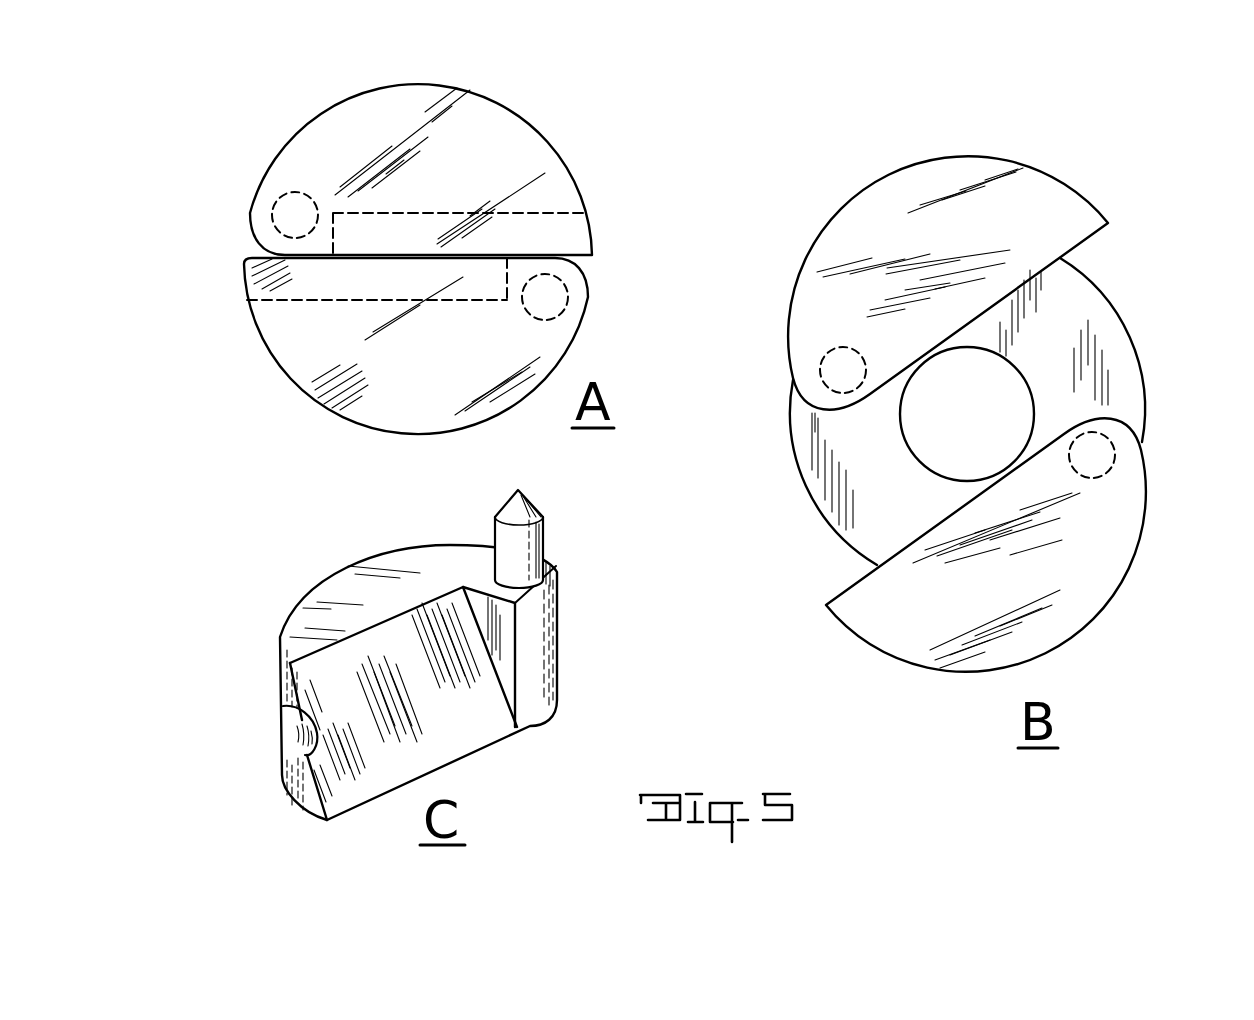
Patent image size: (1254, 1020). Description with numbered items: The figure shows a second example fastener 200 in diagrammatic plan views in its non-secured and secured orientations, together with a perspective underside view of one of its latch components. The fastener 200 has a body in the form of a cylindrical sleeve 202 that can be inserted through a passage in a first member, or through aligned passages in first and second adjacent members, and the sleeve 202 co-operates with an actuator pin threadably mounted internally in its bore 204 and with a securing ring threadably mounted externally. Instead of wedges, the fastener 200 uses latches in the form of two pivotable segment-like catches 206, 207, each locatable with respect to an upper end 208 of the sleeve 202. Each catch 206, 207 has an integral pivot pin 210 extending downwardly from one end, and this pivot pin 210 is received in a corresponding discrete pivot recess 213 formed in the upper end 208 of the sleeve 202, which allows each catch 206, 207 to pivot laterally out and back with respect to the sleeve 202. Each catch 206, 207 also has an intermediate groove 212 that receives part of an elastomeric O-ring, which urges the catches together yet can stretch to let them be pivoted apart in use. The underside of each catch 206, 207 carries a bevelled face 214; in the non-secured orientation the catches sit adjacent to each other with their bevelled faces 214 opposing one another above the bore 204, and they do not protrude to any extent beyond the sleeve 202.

In FIG. 5A, the second example fastener 200 is at (395, 265).
In FIG. 5B, the second example fastener 200 is at (971, 406).
In FIG. 5B, the cylindrical sleeve 202 is at (971, 411).
In FIG. 5B, the bore 204 is at (908, 449).
In FIG. 5A, the catch 206 is at (523, 140).
In FIG. 5B, the catch 206 is at (1058, 200).
In FIG. 5C, the catch 206 is at (384, 634).
In FIG. 5A, the catch 207 is at (357, 407).
In FIG. 5B, the catch 207 is at (1112, 563).
In FIG. 5C, the catch 207 is at (412, 634).
In FIG. 5B, the upper end of the sleeve 208 is at (860, 532).
In FIG. 5C, the pivot pin 210 is at (551, 510).
In FIG. 5C, the intermediate groove 212 is at (283, 719).
In FIG. 5B, the pivot recess 213 is at (843, 370).
In FIG. 5C, the bevelled face 214 is at (407, 757).